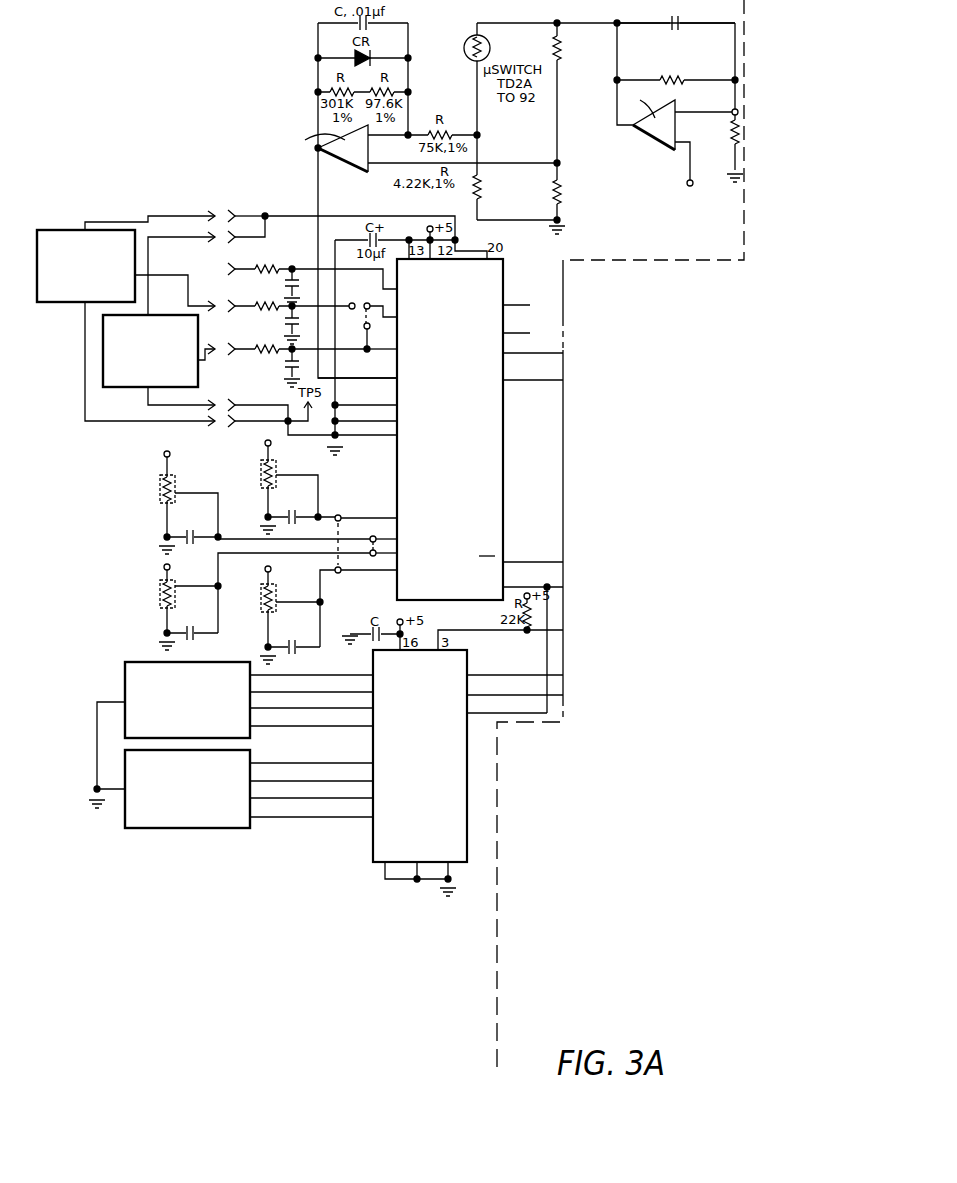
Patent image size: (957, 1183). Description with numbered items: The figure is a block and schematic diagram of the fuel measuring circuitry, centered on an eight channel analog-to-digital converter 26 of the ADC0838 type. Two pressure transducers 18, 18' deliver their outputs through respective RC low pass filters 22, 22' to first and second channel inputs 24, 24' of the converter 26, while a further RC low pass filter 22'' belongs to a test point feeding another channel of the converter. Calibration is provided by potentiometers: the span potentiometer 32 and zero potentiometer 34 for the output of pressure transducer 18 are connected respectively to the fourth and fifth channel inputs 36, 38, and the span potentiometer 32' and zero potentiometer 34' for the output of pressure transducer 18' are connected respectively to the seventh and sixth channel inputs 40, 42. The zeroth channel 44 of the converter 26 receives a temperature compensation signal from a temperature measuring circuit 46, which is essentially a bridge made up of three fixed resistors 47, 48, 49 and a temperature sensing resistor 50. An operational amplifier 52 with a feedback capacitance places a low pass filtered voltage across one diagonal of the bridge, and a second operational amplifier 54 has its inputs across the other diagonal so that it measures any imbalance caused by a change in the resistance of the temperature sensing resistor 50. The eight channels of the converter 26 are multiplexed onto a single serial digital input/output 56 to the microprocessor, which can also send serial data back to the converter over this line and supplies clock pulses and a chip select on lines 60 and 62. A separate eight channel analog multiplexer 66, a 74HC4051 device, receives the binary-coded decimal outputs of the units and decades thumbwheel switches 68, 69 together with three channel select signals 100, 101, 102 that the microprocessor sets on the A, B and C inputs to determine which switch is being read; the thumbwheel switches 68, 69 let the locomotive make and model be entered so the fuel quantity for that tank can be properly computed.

The pressure transducer 18 is at (150, 366).
The pressure transducer 18' is at (86, 286).
The RC low pass filter 22 is at (282, 357).
The RC low pass filter 22' is at (242, 309).
The RC low pass filter 22'' is at (298, 277).
The first channel input 24 is at (371, 360).
The second channel input 24' is at (400, 326).
The analog-to-digital converter 26 is at (480, 531).
The span potentiometer 32 is at (289, 614).
The span potentiometer 32' is at (290, 482).
The zero potentiometer 34 is at (233, 603).
The zero potentiometer 34' is at (181, 502).
The fourth channel input 36 is at (394, 573).
The fifth channel input 38 is at (417, 555).
The seventh channel input 40 is at (394, 517).
The sixth channel input 42 is at (409, 541).
The zeroth channel 44 is at (395, 384).
The temperature measuring circuit 46 is at (660, 103).
The fixed resistor 47 is at (548, 42).
The fixed resistor 48 is at (562, 183).
The fixed resistor 49 is at (482, 181).
The temperature sensing resistor 50 is at (466, 40).
The operational amplifier 52 is at (667, 152).
The operational amplifier 54 is at (372, 172).
The serial digital input/output 56 is at (518, 383).
The clock line 60 is at (550, 586).
The chip select line 62 is at (526, 561).
The analog multiplexer 66 is at (442, 804).
The units thumbwheel switch 68 is at (138, 830).
The decades thumbwheel switch 69 is at (124, 680).
The channel select signal 100 is at (488, 713).
The channel select signal 101 is at (506, 693).
The channel select signal 102 is at (492, 673).